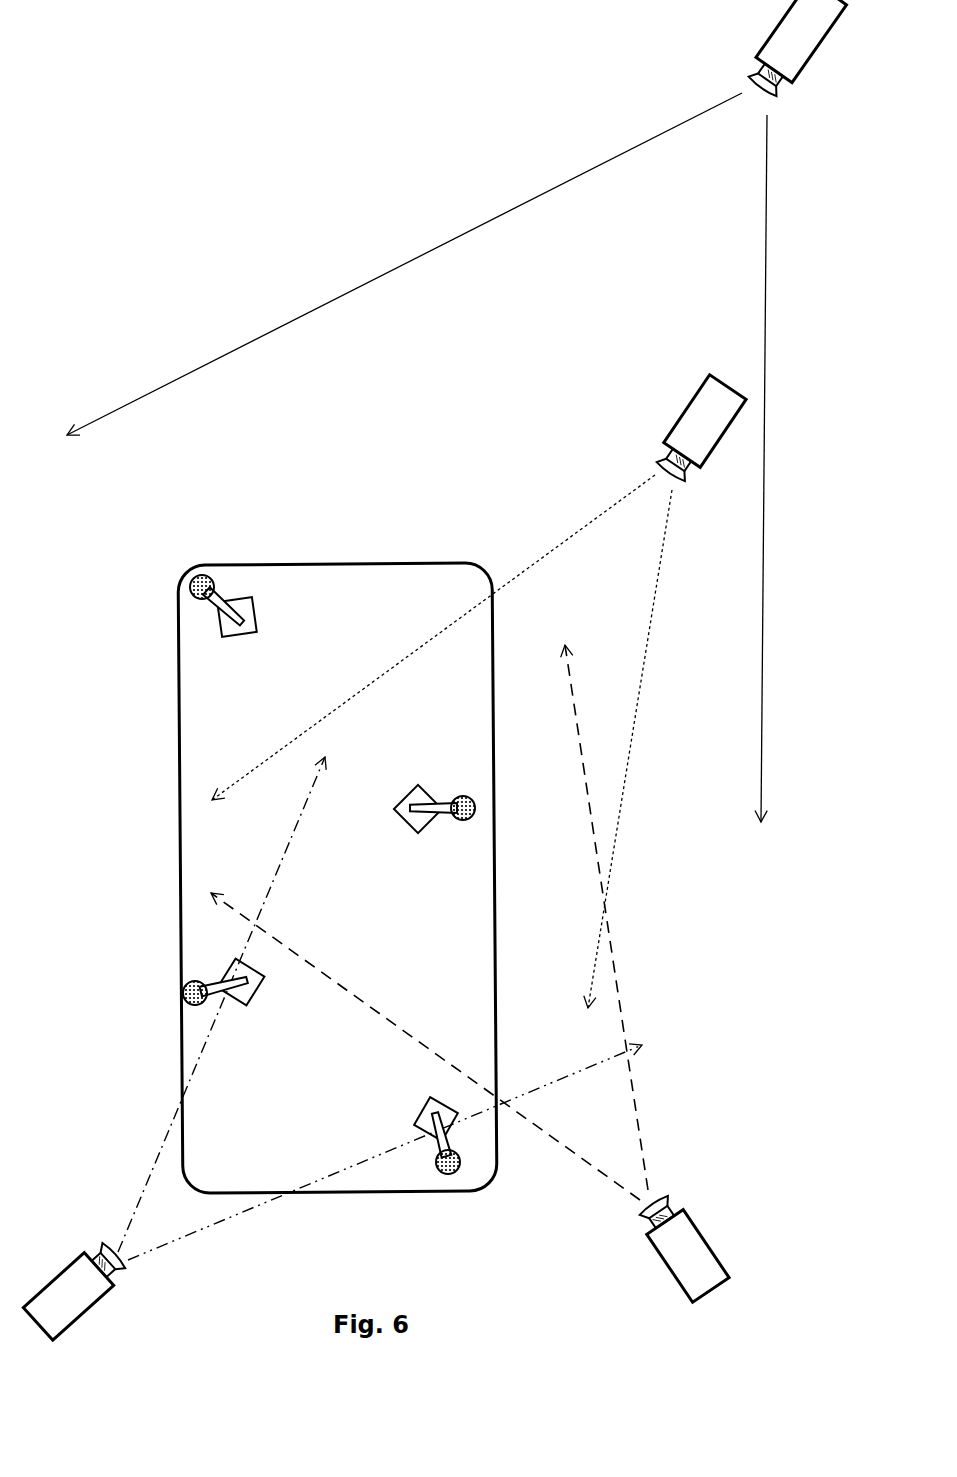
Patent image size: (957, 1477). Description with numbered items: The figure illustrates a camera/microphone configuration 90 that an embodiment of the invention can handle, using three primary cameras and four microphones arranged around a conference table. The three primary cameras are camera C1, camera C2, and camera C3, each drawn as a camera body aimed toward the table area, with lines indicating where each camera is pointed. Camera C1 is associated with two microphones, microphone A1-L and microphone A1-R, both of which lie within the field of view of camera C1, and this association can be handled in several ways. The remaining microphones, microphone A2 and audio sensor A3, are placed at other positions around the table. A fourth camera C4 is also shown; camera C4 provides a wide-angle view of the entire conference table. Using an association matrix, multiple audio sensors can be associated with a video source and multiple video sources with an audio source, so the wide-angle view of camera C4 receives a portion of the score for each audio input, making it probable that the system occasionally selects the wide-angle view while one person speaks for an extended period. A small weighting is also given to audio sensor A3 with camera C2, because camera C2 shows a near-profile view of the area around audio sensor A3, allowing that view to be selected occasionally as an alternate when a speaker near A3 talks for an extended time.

The configuration 90 is at (208, 500).
The camera C1 is at (705, 407).
The camera C2 is at (693, 1258).
The camera C3 is at (65, 1310).
The fourth camera C4 is at (787, 25).
The microphone A1-R is at (245, 990).
The microphone A1-L is at (434, 1120).
The microphone A2 is at (244, 617).
The audio sensor A3 is at (422, 808).